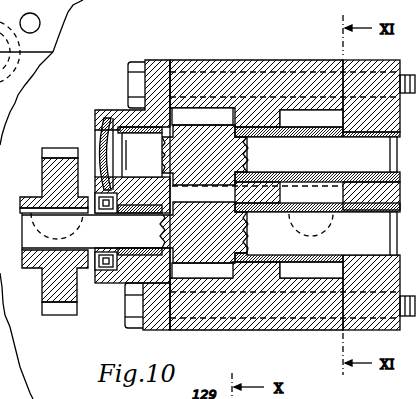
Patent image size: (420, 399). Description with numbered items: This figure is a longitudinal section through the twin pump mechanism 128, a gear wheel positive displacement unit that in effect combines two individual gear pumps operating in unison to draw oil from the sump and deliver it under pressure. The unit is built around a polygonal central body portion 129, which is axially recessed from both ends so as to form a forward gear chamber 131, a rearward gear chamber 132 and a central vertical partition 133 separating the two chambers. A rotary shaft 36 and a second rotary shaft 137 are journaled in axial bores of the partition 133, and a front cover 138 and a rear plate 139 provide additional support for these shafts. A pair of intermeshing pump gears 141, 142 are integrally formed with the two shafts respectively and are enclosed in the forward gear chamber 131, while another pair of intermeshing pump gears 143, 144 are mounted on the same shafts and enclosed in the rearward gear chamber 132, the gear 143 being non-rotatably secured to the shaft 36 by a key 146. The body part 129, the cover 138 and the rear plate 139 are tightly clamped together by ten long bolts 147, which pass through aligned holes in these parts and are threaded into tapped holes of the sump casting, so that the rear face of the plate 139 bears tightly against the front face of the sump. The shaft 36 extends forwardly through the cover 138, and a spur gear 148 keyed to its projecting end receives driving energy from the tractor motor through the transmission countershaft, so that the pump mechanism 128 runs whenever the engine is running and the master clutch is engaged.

The rotary shaft 36 is at (24, 235).
The pump mechanism 128 is at (280, 47).
The central body portion 129 is at (263, 330).
The forward gear chamber 131 is at (205, 280).
The rearward gear chamber 132 is at (321, 279).
The central vertical partition 133 is at (246, 194).
The rotary shaft 137 is at (126, 152).
The front cover 138 is at (159, 61).
The rear plate 139 is at (373, 331).
The pump gear 141 is at (161, 216).
The pump gear 142 is at (161, 170).
The pump gear 143 is at (323, 256).
The pump gear 144 is at (328, 133).
The key 146 is at (332, 212).
The long bolts 147 is at (132, 80).
The spur gear 148 is at (58, 315).